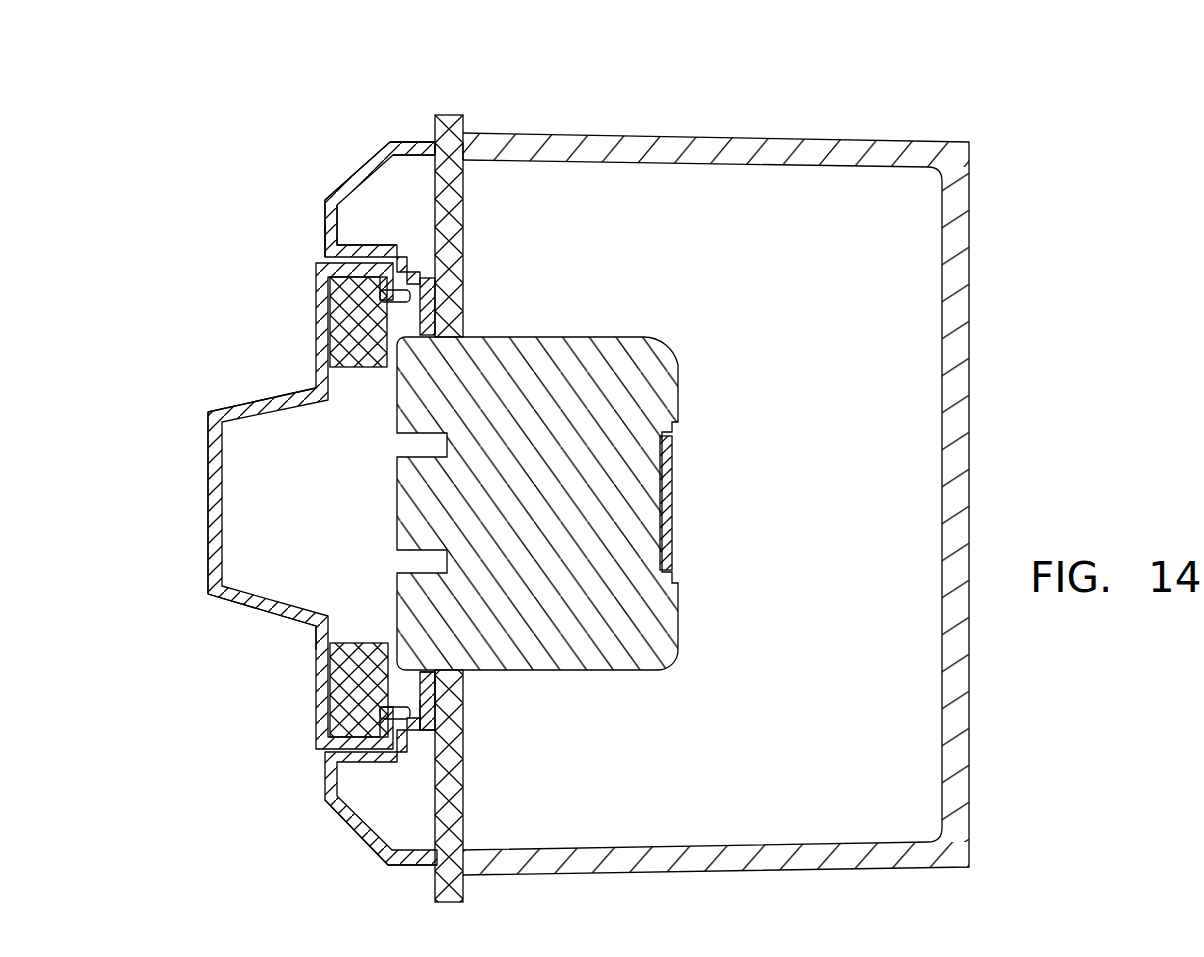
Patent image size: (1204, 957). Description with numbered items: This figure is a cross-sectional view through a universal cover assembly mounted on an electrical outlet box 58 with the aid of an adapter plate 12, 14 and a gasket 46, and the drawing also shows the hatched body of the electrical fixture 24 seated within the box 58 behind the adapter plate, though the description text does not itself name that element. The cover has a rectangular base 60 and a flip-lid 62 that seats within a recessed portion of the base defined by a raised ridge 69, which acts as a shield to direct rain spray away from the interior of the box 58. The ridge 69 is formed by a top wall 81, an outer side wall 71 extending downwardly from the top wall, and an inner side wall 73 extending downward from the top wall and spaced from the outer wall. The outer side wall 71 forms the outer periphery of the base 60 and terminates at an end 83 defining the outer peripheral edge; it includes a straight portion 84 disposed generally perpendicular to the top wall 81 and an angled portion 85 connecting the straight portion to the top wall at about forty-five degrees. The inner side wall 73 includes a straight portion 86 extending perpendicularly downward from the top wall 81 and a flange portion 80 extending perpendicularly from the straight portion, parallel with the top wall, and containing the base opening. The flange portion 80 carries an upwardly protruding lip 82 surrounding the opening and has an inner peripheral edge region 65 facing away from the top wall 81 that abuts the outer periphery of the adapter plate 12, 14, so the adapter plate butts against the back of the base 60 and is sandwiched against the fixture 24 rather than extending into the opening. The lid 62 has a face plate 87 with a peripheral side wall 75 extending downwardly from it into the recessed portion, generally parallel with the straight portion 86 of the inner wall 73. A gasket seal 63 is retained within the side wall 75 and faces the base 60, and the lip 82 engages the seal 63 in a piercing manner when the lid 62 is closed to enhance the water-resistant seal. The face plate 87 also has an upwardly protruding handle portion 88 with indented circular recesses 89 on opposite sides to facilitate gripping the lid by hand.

The adapter plate 12 is at (540, 303).
The adapter plate 14 is at (438, 320).
The motor/armature 24 is at (657, 375).
The gasket 46 is at (465, 238).
The electrical outlet box 58 is at (703, 148).
The base 60 is at (372, 155).
The lid 62 is at (214, 410).
The gasket seal 63 is at (352, 687).
The inner peripheral edge region 65 is at (440, 716).
The raised ridge 69 is at (326, 208).
The outer side wall 71 is at (372, 150).
The inner side wall 73 is at (360, 247).
The peripheral side wall 75 is at (382, 737).
The flange portion 80 is at (425, 702).
The top wall 81 is at (324, 231).
The upwardly protruding lip 82 is at (410, 736).
The end 83 is at (473, 140).
The straight portion 84 is at (395, 147).
The angled portion 85 is at (328, 200).
The straight portion 86 is at (380, 760).
The face plate 87 is at (318, 633).
The handle portion 88 is at (209, 467).
The indented circular recesses 89 is at (271, 393).